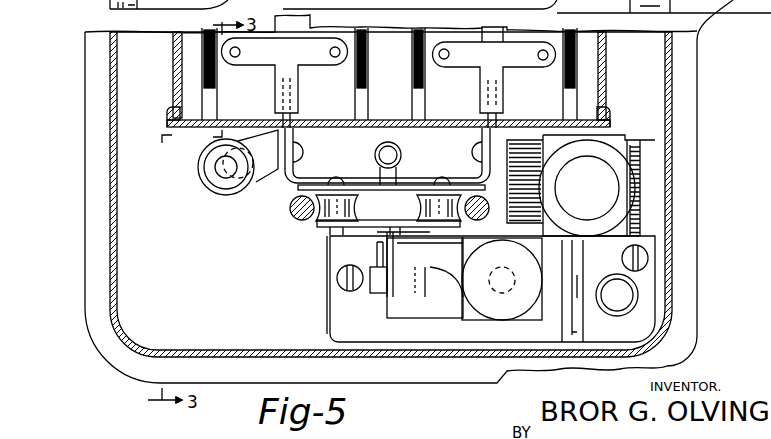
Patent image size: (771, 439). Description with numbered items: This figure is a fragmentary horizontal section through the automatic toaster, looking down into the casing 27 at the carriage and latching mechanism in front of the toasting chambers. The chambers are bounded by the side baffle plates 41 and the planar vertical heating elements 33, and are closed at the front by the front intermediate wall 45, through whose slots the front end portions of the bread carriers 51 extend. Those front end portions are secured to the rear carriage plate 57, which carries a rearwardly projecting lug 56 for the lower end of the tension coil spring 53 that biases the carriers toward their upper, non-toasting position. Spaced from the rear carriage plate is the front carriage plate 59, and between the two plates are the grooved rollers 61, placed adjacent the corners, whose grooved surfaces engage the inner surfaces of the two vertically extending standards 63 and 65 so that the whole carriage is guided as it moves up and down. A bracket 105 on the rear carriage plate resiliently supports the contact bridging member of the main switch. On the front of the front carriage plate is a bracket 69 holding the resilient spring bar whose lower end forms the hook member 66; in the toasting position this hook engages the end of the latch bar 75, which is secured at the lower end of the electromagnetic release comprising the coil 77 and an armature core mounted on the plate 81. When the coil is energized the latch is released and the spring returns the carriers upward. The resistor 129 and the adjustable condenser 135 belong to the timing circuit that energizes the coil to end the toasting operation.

The outer casing 27 is at (110, 173).
The side baffle plates 41 is at (173, 48).
The electric heating elements 33 is at (217, 96).
The bread carriers 51 is at (298, 38).
The front intermediate wall 45 is at (187, 128).
The bracket 105 is at (265, 180).
The rear carriage plate 57 is at (357, 182).
The tension coil spring 53 is at (400, 150).
The rearwardly projecting lug 56 is at (398, 180).
The grooved rollers 61 is at (415, 208).
The standard 63 is at (291, 218).
The standard 65 is at (479, 186).
The front carriage plate 59 is at (318, 230).
The hook member 66 is at (330, 322).
The bracket 69 is at (383, 252).
The plate 81 is at (370, 290).
The latch bar 75 is at (397, 297).
The coil 77 is at (487, 308).
The adjustable condenser 135 is at (640, 162).
The resistor 129 is at (638, 295).